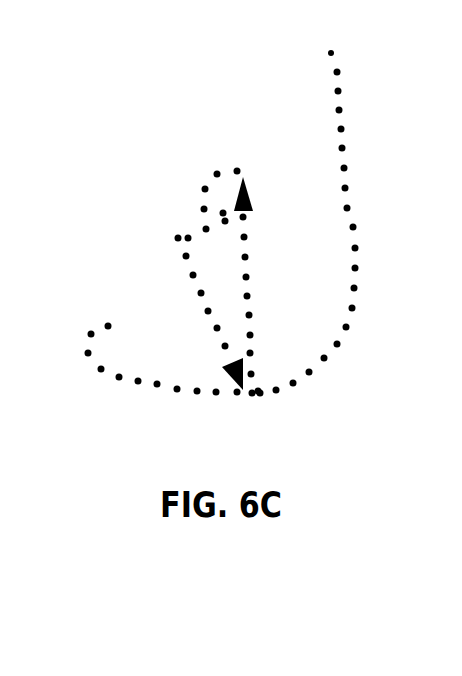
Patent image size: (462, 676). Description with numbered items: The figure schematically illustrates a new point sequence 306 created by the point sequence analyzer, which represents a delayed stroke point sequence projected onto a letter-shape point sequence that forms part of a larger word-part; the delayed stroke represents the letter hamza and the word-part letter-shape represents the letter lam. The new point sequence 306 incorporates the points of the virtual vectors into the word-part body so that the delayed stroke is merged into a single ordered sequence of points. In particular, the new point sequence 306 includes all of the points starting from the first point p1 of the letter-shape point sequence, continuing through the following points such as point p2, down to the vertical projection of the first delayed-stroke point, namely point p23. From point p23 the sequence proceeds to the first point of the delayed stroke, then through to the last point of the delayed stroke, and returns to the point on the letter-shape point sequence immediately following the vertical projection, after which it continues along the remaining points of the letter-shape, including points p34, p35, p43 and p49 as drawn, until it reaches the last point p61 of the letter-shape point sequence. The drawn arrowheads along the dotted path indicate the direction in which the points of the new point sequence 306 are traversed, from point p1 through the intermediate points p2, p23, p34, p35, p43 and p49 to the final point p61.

The new point sequence 306 is at (372, 342).
The first point of letter-shape point sequence p1 is at (308, 47).
The trajectory point p2 is at (314, 70).
The vertical projection of point q1 p23 is at (269, 411).
The trajectory point p34 is at (266, 257).
The trajectory point p35 is at (225, 178).
The trajectory point p43 is at (177, 292).
The trajectory point p49 is at (222, 395).
The last point of letter-shape point sequence p61 is at (158, 340).